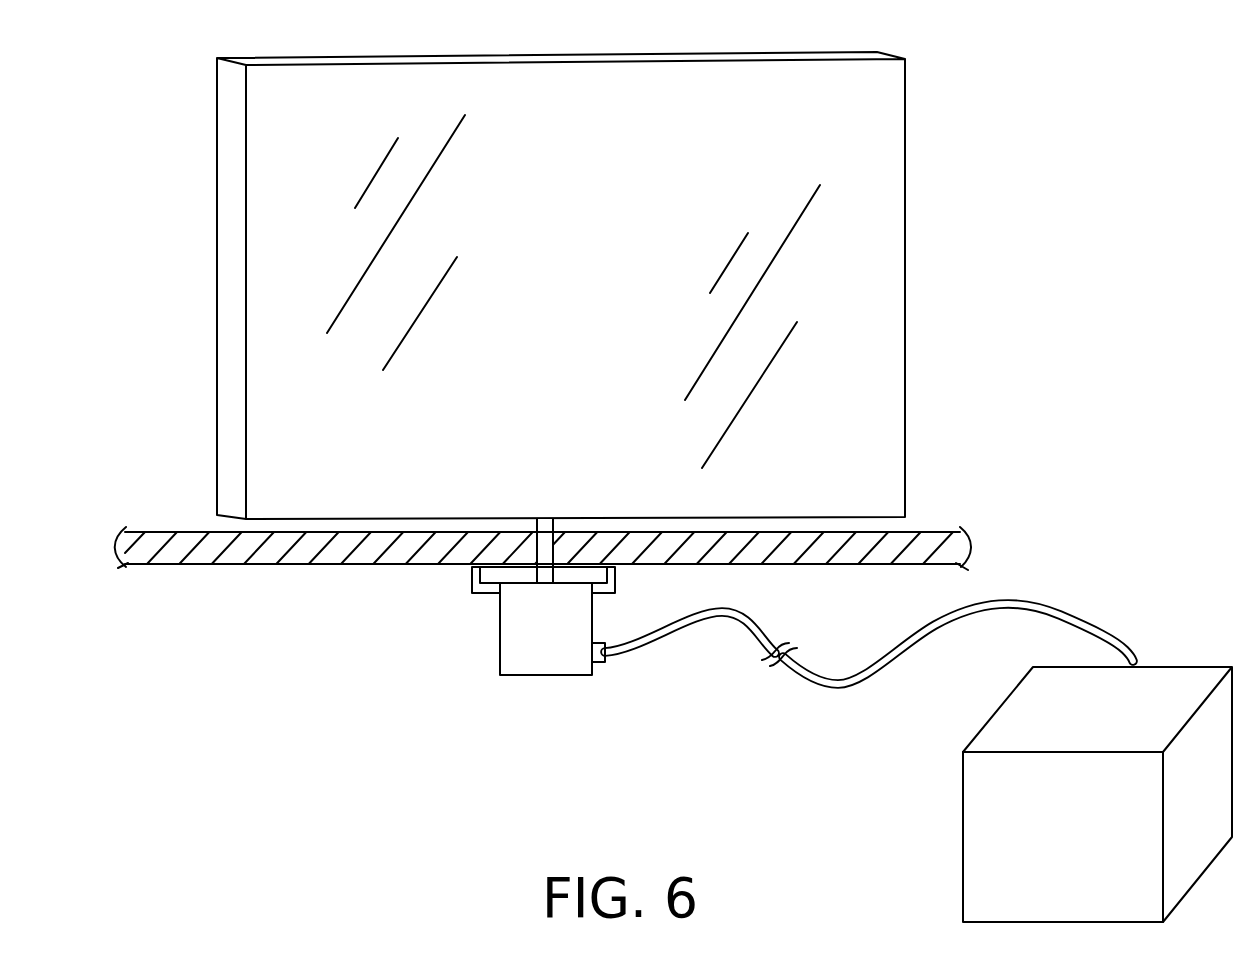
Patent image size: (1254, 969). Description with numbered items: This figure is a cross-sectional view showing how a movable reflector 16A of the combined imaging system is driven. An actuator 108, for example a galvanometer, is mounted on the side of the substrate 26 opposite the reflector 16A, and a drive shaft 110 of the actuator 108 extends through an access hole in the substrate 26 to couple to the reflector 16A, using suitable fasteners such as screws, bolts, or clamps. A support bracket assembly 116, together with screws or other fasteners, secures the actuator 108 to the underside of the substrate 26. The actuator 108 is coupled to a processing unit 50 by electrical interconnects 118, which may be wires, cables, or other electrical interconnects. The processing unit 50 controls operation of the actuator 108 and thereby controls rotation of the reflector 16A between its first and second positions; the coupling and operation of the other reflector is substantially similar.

The reflector 16A is at (905, 83).
The substrate 26 is at (932, 531).
The processing unit 50 is at (1077, 847).
The actuator 108 is at (535, 677).
The drive shaft 110 is at (530, 578).
The support bracket assembly 116 is at (472, 582).
The electrical interconnects 118 is at (640, 652).